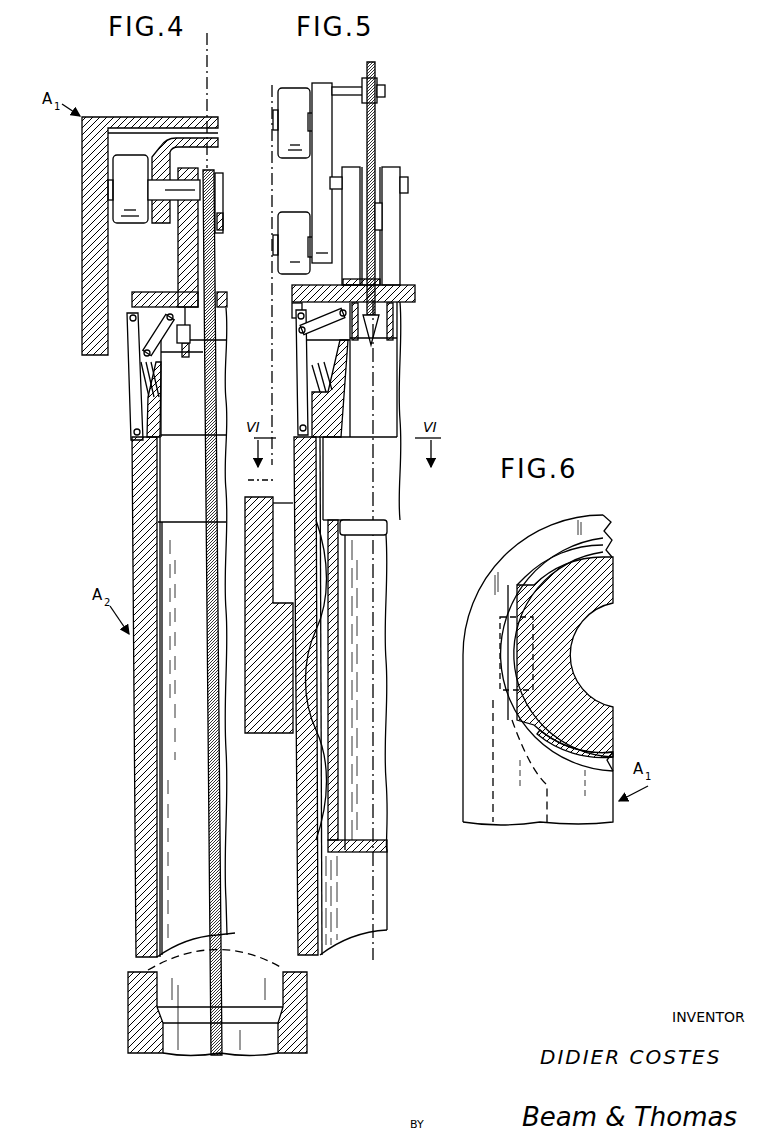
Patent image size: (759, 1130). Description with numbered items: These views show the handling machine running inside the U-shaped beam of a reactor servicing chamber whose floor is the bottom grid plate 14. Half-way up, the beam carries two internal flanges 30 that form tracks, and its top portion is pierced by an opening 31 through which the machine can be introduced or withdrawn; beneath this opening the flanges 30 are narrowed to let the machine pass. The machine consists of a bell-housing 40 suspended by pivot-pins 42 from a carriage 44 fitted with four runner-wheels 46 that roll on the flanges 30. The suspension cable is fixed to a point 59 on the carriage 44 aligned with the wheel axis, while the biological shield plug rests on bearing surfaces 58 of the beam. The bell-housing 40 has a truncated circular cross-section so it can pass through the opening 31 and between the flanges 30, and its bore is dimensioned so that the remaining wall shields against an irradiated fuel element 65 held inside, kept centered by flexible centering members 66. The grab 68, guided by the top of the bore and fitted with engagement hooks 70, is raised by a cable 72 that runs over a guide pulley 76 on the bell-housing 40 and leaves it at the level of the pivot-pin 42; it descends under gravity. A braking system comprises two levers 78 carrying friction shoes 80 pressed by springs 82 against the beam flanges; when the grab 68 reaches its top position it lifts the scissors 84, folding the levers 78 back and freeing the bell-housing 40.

In FIG. 4, the bottom grid plate 14 is at (132, 1022).
In FIG. 4, the internal flange 30 is at (177, 237).
In FIG. 6, the internal flange 30 is at (505, 667).
In FIG. 5, the opening 31 is at (269, 615).
In FIG. 6, the opening 31 is at (534, 736).
In FIG. 4, the bell-housing 40 is at (146, 500).
In FIG. 5, the bell-housing 40 is at (314, 508).
In FIG. 6, the bell-housing 40 is at (596, 591).
In FIG. 4, the pivot-pin 42 is at (168, 222).
In FIG. 5, the pivot-pin 42 is at (340, 176).
In FIG. 5, the carriage 44 is at (322, 96).
In FIG. 4, the runner-wheel 46 is at (118, 166).
In FIG. 5, the runner-wheel 46 is at (289, 93).
In FIG. 6, the bearing surface 58 is at (593, 553).
In FIG. 5, the attachment point 59 is at (375, 86).
In FIG. 5, the irradiated fuel element 65 is at (363, 709).
In FIG. 5, the flexible centering member 66 is at (326, 621).
In FIG. 5, the grab 68 is at (369, 416).
In FIG. 5, the engagement hook 70 is at (372, 536).
In FIG. 4, the cable 72 is at (216, 355).
In FIG. 5, the cable 72 is at (377, 123).
In FIG. 4, the guide pulley 76 is at (219, 186).
In FIG. 5, the guide pulley 76 is at (382, 173).
In FIG. 4, the lever 78 is at (131, 428).
In FIG. 4, the friction shoe 80 is at (131, 358).
In FIG. 4, the spring 82 is at (141, 399).
In FIG. 4, the scissors 84 is at (175, 356).
In FIG. 5, the scissors 84 is at (393, 352).